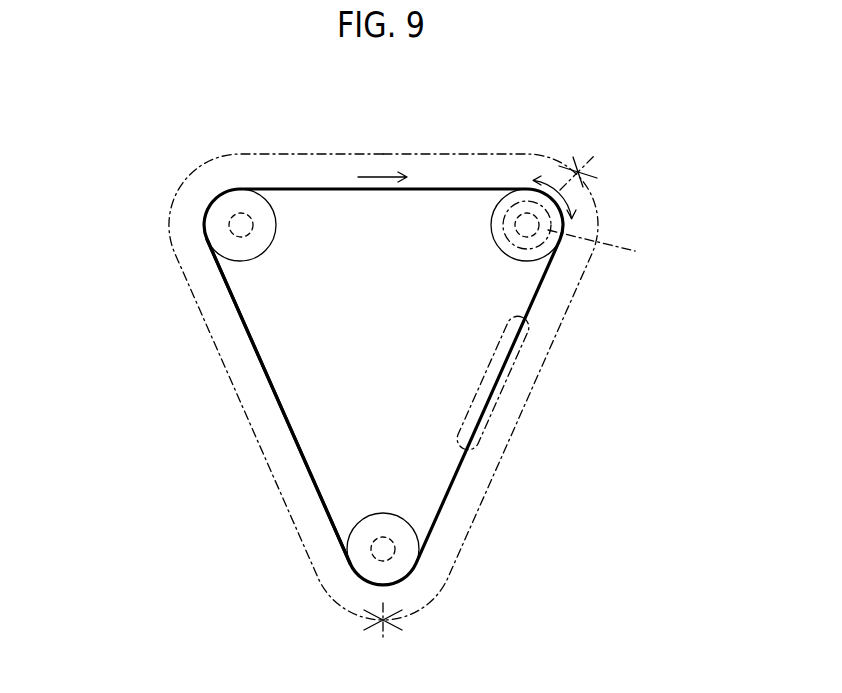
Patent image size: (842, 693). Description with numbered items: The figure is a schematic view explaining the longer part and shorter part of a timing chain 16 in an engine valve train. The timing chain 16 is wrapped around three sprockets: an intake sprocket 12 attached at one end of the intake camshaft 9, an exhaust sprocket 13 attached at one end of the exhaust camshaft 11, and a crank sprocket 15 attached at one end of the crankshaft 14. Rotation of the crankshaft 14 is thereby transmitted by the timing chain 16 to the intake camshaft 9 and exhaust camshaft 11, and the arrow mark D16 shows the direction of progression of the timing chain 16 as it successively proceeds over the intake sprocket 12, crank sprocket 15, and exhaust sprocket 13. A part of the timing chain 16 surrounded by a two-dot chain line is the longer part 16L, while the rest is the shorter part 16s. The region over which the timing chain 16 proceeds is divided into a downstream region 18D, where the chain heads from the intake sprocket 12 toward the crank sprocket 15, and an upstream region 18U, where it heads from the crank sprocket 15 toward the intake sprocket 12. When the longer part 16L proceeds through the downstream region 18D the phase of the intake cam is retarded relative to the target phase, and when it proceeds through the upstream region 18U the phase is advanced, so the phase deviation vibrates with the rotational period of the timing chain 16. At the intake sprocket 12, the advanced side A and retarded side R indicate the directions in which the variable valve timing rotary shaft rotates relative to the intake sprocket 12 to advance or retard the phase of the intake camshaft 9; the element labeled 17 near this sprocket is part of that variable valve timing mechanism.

The intake camshaft 9 is at (513, 224).
The exhaust camshaft 11 is at (252, 226).
The intake sprocket 12 is at (510, 250).
The exhaust sprocket 13 is at (260, 252).
The crankshaft 14 is at (370, 541).
The crank sprocket 15 is at (400, 523).
The timing chain 16 is at (267, 368).
The shorter part 16s is at (297, 447).
The longer part 16L is at (497, 403).
The axis line 17 is at (603, 247).
The upstream region 18U is at (200, 313).
The downstream region 18D is at (560, 328).
The advanced side A is at (566, 205).
The retarded side R is at (543, 180).
The arrow mark D16 is at (380, 176).